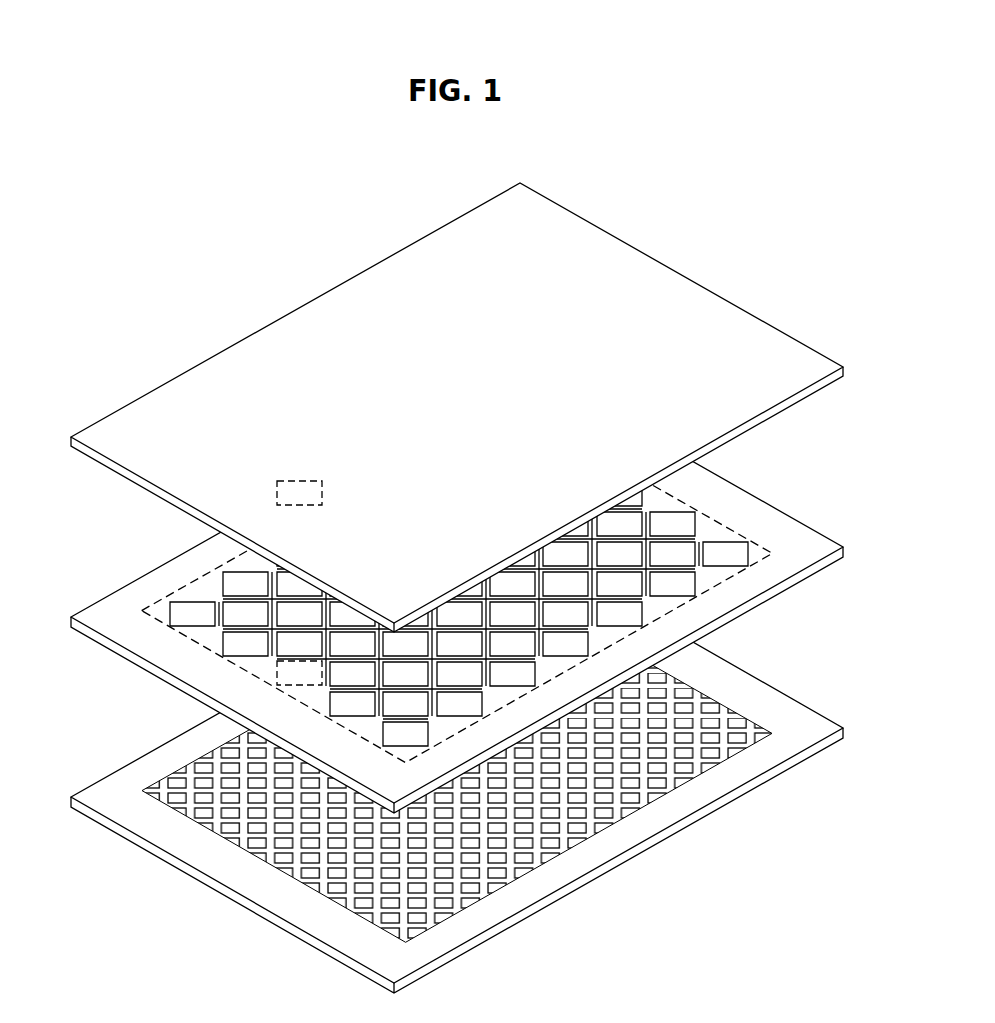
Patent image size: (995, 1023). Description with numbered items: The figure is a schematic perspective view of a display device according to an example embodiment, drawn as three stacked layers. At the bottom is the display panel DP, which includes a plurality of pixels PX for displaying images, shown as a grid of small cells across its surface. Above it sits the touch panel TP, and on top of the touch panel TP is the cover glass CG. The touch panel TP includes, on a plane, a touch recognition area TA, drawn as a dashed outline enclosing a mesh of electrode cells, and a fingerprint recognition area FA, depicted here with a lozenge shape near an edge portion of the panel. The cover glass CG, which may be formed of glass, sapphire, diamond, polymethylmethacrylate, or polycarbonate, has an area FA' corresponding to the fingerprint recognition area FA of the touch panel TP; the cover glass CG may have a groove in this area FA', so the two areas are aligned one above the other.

The cover glass CG is at (806, 322).
The touch panel TP is at (806, 513).
The display panel DP is at (806, 694).
The touch recognition area TA is at (173, 593).
The fingerprint recognition area FA is at (215, 690).
The area corresponding to the fingerprint recognition area FA' is at (202, 502).
The pixel PX is at (748, 740).